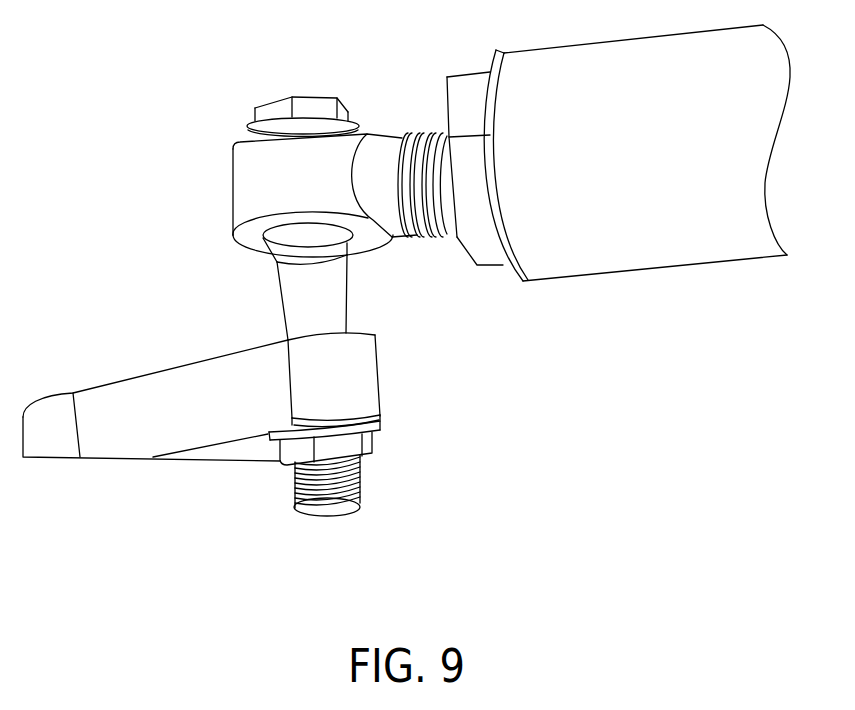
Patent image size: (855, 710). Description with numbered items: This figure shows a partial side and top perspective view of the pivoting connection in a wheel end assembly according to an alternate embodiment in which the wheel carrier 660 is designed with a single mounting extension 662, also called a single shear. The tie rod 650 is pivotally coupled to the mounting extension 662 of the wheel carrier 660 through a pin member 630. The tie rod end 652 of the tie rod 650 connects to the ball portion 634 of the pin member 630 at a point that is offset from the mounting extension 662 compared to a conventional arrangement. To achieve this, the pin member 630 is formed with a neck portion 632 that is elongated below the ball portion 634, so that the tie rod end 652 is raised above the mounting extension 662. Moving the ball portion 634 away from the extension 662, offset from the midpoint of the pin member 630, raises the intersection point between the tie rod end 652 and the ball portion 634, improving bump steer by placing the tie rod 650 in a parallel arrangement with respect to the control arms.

The pin member 630 is at (352, 297).
The neck portion 632 is at (332, 311).
The ball portion 634 is at (267, 243).
The tie rod 650 is at (653, 163).
The tie rod end 652 is at (302, 183).
The wheel carrier 660 is at (202, 415).
The mounting extension 662 is at (362, 392).